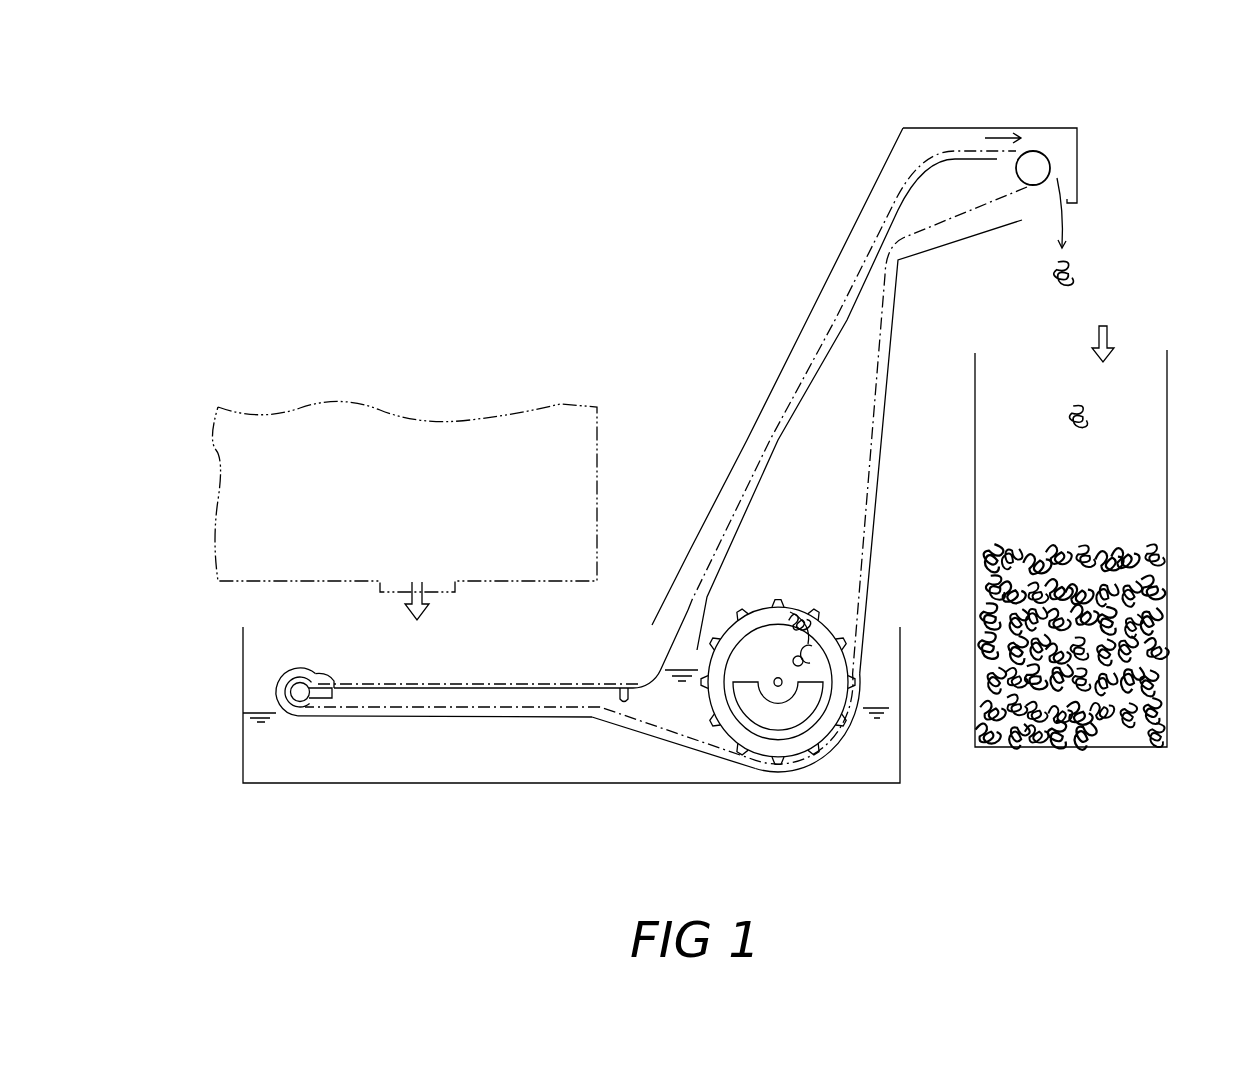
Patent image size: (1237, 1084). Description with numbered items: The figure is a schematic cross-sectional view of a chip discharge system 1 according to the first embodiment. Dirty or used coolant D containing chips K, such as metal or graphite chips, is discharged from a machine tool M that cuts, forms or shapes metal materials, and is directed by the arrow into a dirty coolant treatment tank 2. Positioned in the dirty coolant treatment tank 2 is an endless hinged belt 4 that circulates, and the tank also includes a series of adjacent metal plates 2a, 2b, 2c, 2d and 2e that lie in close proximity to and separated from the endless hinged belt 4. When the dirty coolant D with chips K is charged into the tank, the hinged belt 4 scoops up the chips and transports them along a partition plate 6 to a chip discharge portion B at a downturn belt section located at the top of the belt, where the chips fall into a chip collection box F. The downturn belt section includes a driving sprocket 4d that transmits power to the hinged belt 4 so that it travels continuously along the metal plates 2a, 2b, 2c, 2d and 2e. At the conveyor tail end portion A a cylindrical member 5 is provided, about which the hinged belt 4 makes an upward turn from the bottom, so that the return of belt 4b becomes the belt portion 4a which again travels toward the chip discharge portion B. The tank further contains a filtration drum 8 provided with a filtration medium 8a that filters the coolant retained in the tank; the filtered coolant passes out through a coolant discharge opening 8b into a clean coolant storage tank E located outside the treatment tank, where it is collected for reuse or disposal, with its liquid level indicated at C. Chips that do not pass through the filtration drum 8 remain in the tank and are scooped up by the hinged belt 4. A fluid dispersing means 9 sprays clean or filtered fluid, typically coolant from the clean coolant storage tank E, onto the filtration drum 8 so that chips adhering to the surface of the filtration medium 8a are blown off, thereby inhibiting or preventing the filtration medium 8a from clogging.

The chip discharge system 1 is at (465, 792).
The dirty coolant treatment tank 2 is at (577, 683).
The metal plate 2a is at (268, 685).
The metal plate 2b is at (478, 722).
The metal plate 2c is at (642, 740).
The metal plate 2d is at (847, 752).
The metal plate 2e is at (882, 481).
The endless hinged belt 4 is at (531, 682).
The belt portion 4a is at (408, 683).
The return of belt 4b is at (371, 714).
The driving sprocket 4d is at (1050, 167).
The cylindrical member 5 is at (301, 702).
The partition plate 6 is at (623, 688).
The filtration drum 8 is at (796, 598).
The filtration medium 8a is at (797, 745).
The coolant discharge opening 8b is at (770, 722).
The fluid dispersing means 9 is at (790, 643).
The conveyor tail end portion A is at (296, 664).
The chip discharge portion B is at (1033, 120).
The cleaning liquid surface C is at (890, 708).
The dirty coolant D is at (426, 606).
The clean coolant storage tank E is at (900, 660).
The chip collection box F is at (1150, 474).
The chips K is at (1080, 284).
The machine tool M is at (404, 496).